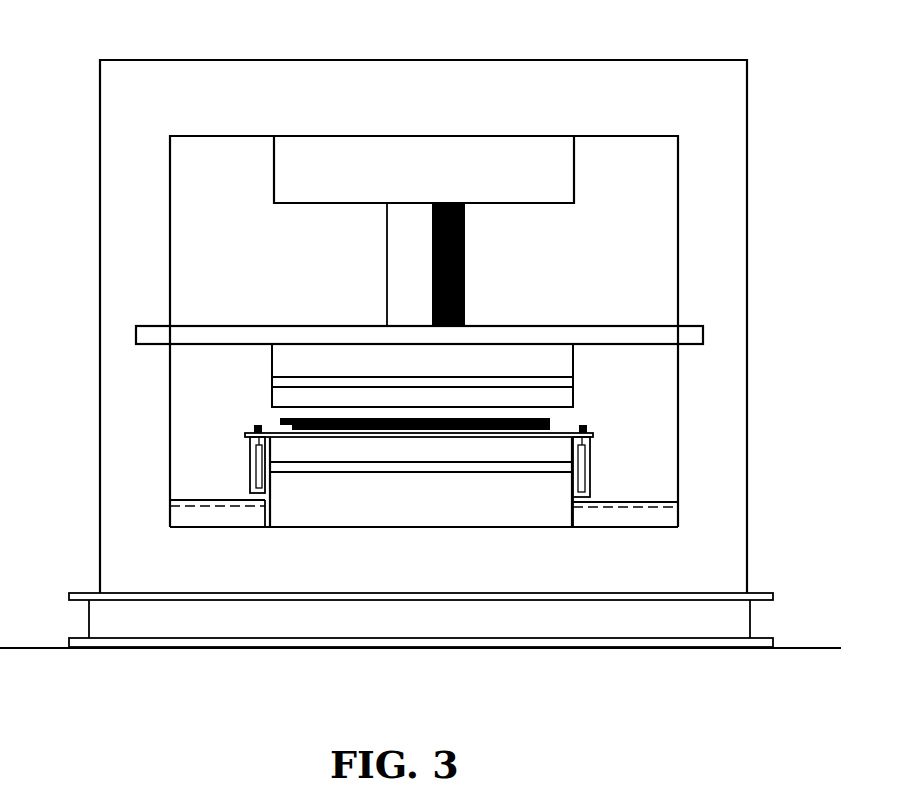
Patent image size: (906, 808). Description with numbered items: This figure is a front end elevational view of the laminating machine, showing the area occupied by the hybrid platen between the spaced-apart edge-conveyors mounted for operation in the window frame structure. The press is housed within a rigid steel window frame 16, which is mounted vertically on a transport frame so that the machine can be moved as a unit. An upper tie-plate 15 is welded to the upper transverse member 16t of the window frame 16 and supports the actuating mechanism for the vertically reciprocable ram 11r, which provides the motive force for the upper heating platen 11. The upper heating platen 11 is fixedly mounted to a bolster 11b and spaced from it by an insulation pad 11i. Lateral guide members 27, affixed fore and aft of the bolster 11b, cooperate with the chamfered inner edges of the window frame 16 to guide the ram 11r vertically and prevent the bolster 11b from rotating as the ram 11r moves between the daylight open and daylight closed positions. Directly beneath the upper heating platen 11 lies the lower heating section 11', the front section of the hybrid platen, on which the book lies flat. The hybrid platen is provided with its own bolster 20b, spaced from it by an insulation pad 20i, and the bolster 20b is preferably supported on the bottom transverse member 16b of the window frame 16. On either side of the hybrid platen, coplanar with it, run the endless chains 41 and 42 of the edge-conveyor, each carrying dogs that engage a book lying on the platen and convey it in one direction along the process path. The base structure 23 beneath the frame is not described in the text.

The window frame 16 is at (480, 55).
The upper transverse member 16t is at (212, 137).
The bottom transverse member 16b is at (288, 570).
The upper tie-plate 15 is at (452, 182).
The ram 11r is at (467, 263).
The lateral guide member 27 is at (338, 325).
The bolster 11b is at (573, 368).
The insulation pad 11i is at (270, 380).
The upper heating platen 11 is at (552, 407).
The lower heating section 11' is at (539, 440).
The endless chain 41 is at (258, 476).
The endless chain 42 is at (585, 485).
The bolster 20b is at (307, 507).
The insulation pad 20i is at (518, 465).
The base plate 23 is at (750, 627).